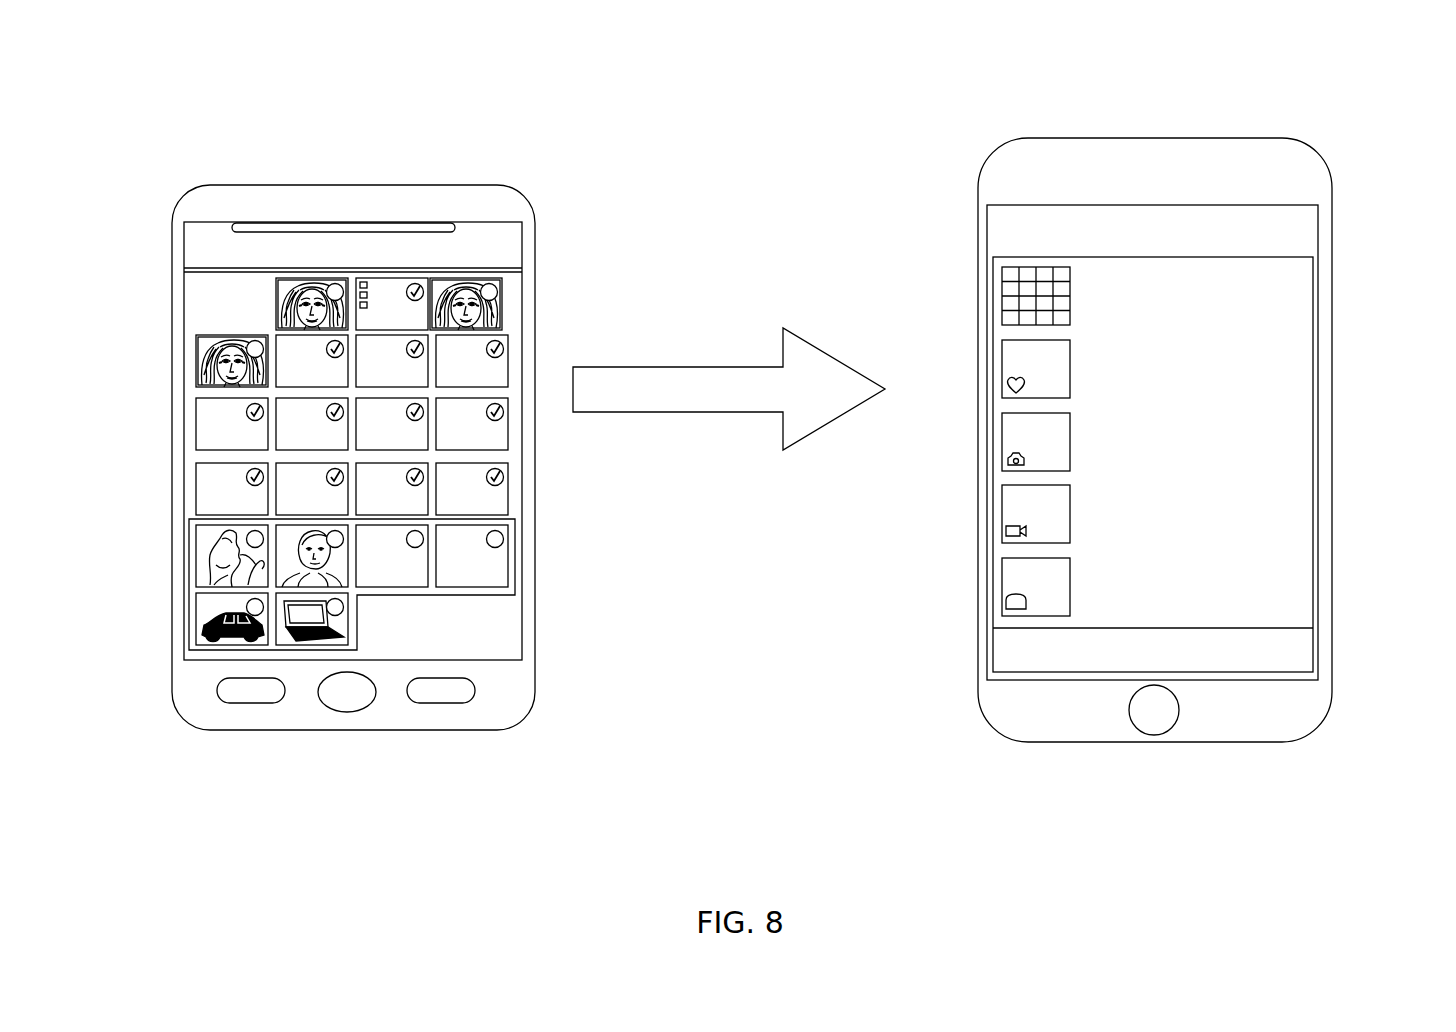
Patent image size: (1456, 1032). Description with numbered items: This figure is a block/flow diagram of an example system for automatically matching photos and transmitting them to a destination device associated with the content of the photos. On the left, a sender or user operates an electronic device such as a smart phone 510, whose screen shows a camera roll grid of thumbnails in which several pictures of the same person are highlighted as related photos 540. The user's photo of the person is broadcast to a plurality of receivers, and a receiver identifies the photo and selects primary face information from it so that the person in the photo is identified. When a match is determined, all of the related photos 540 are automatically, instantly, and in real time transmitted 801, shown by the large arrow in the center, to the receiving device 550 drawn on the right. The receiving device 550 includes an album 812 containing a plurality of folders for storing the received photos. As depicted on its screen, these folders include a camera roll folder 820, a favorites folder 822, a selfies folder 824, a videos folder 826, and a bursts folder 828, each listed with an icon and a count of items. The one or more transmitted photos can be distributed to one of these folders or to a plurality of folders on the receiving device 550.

The smart phone 510 is at (420, 185).
The related photos 540 is at (277, 308).
The transmission 801 is at (668, 367).
The receiving device 550 is at (1153, 138).
The album 812 is at (1205, 242).
The camera roll folder 820 is at (1218, 298).
The favorites folder 822 is at (1218, 368).
The selfies folder 824 is at (1218, 437).
The videos folder 826 is at (1218, 507).
The bursts folder 828 is at (1218, 577).